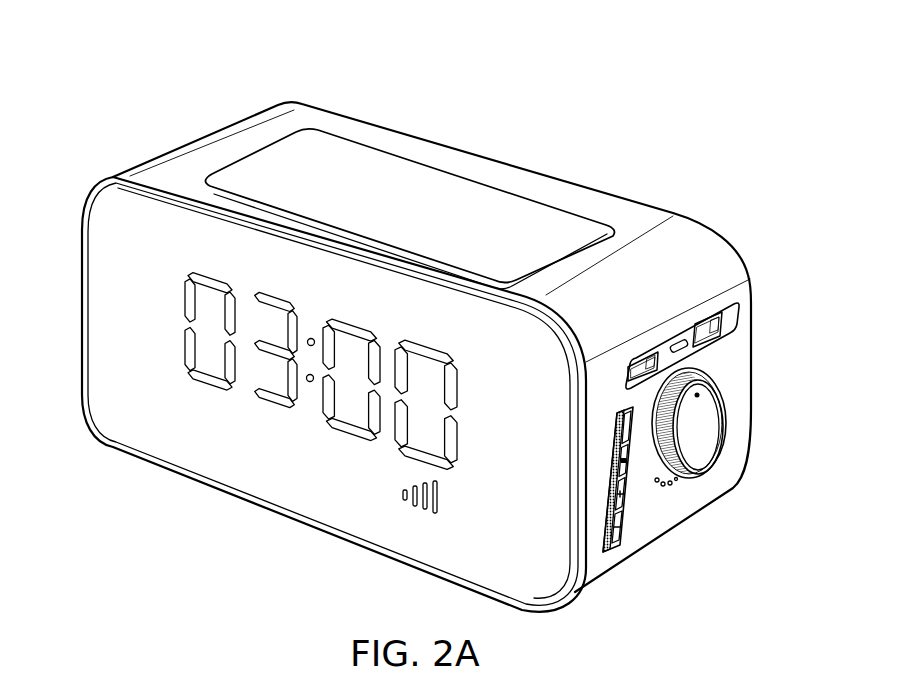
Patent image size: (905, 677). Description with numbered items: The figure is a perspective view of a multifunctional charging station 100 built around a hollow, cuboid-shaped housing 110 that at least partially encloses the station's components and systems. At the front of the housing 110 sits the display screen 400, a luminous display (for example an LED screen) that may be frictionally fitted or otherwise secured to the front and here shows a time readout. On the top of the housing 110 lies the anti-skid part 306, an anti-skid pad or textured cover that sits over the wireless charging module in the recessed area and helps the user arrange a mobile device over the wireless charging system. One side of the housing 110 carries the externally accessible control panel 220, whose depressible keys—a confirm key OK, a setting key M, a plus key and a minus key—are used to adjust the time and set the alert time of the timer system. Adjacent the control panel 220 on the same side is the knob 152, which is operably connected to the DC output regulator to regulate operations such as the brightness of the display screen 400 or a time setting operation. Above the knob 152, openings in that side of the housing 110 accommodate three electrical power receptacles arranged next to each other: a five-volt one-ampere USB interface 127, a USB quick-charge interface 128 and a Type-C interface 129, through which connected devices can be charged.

The charging station 100 is at (102, 40).
The housing 110 is at (177, 165).
The anti-skid part 306 is at (383, 180).
The USB 5V 1 A interface 127 is at (673, 342).
The USB QC3.0 interface 128 is at (726, 322).
The Type-C interface 129 is at (690, 346).
The knob 152 is at (694, 438).
The control panel 220 is at (630, 518).
The display screen 400 is at (529, 537).